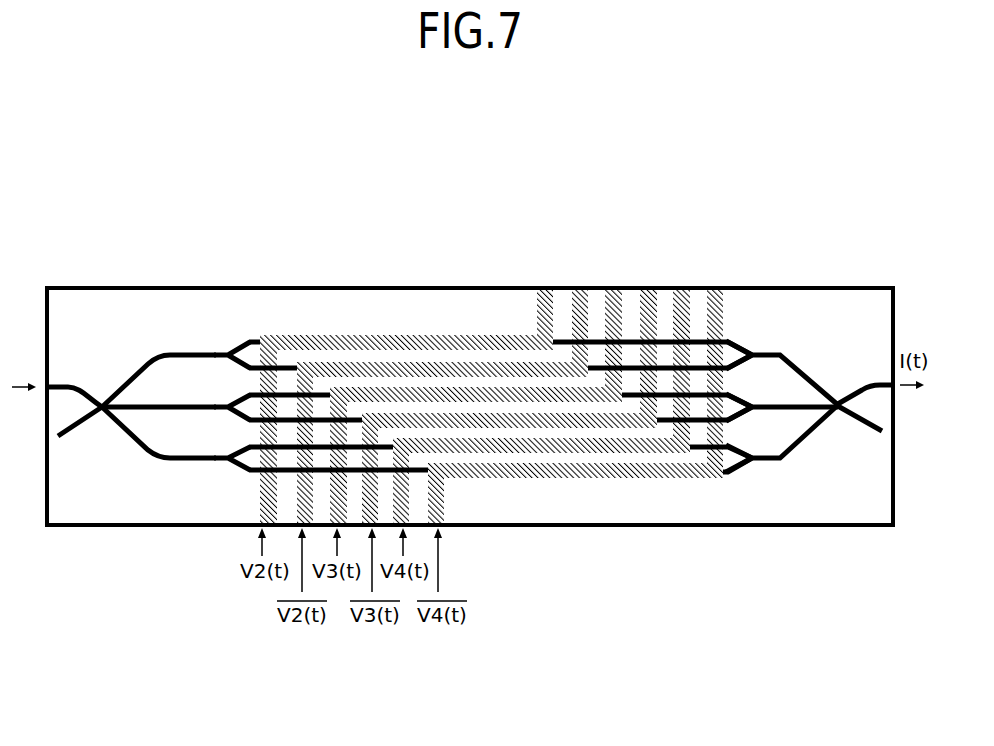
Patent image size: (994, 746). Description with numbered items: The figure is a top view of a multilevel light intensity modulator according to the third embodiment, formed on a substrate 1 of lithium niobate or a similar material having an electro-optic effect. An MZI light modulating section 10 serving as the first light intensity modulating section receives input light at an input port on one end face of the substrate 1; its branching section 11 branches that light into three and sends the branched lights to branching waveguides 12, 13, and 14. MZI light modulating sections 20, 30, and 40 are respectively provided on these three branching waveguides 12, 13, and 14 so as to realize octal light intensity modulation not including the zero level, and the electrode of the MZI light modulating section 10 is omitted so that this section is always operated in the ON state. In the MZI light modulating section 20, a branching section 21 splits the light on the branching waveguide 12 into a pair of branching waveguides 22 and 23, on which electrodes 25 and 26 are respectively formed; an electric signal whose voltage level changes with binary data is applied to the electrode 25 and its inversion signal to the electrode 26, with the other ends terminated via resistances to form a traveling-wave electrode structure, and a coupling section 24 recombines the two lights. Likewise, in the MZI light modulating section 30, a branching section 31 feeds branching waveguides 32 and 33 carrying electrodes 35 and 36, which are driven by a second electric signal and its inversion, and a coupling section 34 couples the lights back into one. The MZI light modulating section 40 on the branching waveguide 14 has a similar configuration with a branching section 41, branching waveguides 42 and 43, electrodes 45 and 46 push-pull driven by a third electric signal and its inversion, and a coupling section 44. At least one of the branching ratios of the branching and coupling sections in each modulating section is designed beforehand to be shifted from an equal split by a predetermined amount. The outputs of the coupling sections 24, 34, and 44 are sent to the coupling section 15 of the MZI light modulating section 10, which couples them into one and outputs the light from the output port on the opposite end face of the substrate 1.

The substrate 1 is at (858, 526).
The MZI light modulating section 10 is at (123, 222).
The branching section 11 is at (100, 403).
The branching waveguide 12 is at (153, 361).
The branching waveguide 13 is at (137, 404).
The branching waveguide 14 is at (145, 455).
The coupling section 15 is at (840, 402).
The MZI light modulating section 20 is at (745, 267).
The branching section 21 is at (236, 351).
The branching waveguide 22 is at (253, 341).
The branching waveguide 23 is at (287, 366).
The coupling section 24 is at (752, 350).
The electrode 25 is at (395, 335).
The electrode 26 is at (440, 361).
The MZI light modulating section 30 is at (511, 372).
The branching section 31 is at (233, 403).
The branching waveguide 32 is at (313, 392).
The branching waveguide 33 is at (352, 418).
The coupling section 34 is at (752, 403).
The electrode 35 is at (493, 387).
The electrode 36 is at (530, 413).
The MZI light modulating section 40 is at (506, 372).
The branching section 41 is at (232, 455).
The branching waveguide 42 is at (227, 466).
The branching waveguide 43 is at (248, 474).
The coupling section 44 is at (752, 455).
The electrode 45 is at (543, 447).
The electrode 46 is at (588, 468).